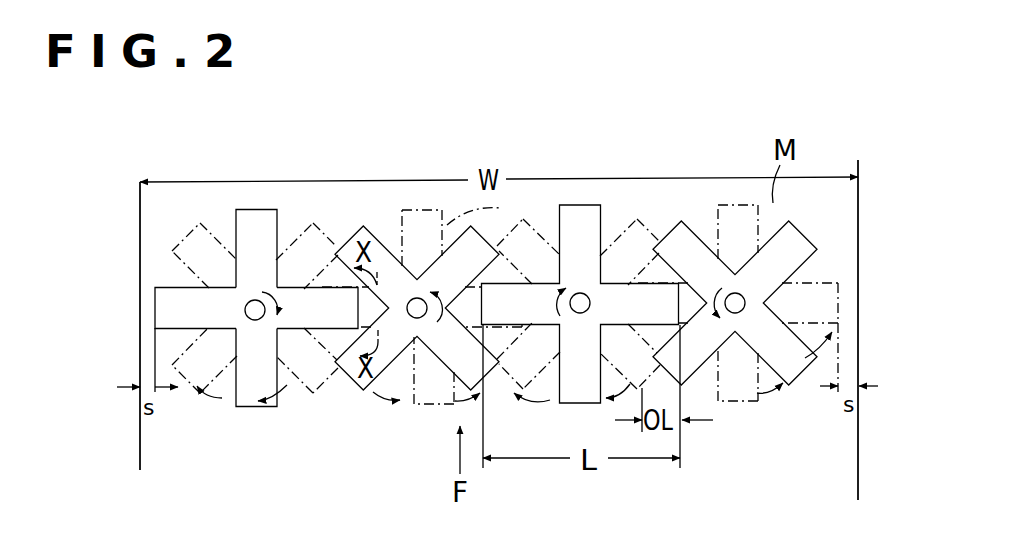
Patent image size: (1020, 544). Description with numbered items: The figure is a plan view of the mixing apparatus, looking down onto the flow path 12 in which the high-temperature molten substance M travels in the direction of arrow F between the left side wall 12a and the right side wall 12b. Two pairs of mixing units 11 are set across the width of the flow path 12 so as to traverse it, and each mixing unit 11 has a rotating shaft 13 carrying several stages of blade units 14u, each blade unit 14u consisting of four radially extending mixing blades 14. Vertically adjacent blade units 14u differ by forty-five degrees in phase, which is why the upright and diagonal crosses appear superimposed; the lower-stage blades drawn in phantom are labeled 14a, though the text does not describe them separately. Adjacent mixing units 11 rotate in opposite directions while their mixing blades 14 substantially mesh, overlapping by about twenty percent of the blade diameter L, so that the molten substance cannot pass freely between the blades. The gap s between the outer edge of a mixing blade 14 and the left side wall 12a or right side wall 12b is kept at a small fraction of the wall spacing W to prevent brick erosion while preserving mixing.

The mixing unit 11 is at (274, 208).
The flow path 12 is at (860, 207).
The left side wall 12a is at (140, 232).
The right side wall 12b is at (858, 237).
The rotating shaft 13 is at (245, 310).
The mixing blade 14 is at (257, 209).
The blade unit 14u is at (218, 224).
The lower blade 14a is at (232, 404).